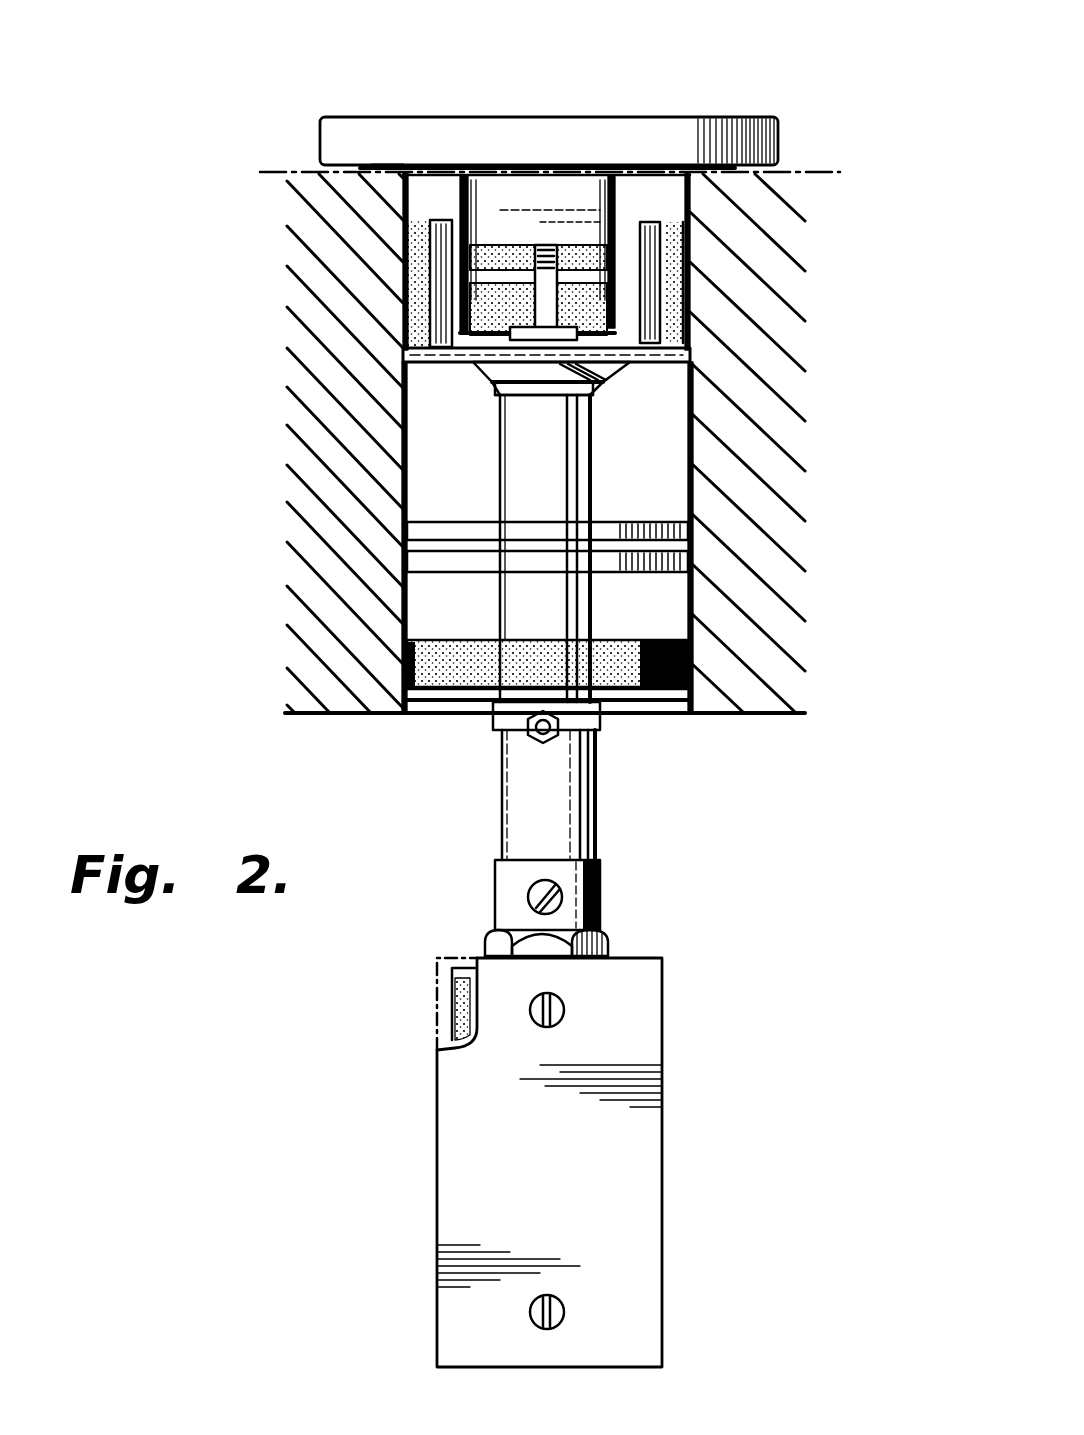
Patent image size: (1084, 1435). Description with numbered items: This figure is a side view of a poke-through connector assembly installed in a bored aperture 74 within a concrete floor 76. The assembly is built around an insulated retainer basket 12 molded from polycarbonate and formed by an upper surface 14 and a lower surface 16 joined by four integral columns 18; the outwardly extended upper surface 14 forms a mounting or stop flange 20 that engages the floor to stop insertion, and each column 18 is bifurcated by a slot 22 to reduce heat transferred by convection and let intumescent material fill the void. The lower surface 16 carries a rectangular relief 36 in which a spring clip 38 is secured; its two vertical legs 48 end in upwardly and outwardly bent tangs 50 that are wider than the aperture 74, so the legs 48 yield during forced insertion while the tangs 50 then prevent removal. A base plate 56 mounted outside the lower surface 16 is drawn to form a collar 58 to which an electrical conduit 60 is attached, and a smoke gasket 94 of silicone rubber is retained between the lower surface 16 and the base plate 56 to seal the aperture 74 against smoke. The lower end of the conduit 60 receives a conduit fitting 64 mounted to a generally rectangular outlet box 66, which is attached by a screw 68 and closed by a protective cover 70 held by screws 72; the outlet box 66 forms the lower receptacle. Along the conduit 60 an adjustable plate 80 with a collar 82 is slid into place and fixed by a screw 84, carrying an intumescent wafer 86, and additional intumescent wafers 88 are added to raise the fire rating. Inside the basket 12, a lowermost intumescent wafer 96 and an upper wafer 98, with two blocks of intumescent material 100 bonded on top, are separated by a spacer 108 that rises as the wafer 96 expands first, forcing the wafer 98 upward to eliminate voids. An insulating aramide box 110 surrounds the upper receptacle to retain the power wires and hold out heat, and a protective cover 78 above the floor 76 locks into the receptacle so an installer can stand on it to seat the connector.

The retainer basket 12 is at (397, 200).
The upper surface 14 is at (415, 168).
The lower surface 16 is at (456, 350).
The columns 18 is at (300, 283).
The mounting or stop flange 20 is at (373, 165).
The slot 22 is at (648, 365).
The relief 36 is at (497, 410).
The spring clip 38 is at (580, 405).
The vertical legs 48 is at (550, 340).
The tangs 50 is at (556, 335).
The base plate 56 is at (400, 366).
The collar 58 is at (478, 368).
The electrical conduit 60 is at (565, 607).
The conduit fitting 64 is at (605, 908).
The outlet box 66 is at (450, 1010).
The screw 68 is at (528, 897).
The protective cover 70 is at (465, 1228).
The screws 72 is at (565, 1010).
The bored aperture 74 is at (403, 613).
The concrete floor 76 is at (793, 177).
The protective cover 78 is at (772, 118).
The adjustable plate 80 is at (425, 692).
The collar 82 is at (598, 727).
The screw 84 is at (535, 730).
The wafer 86 is at (647, 700).
The intumescent wafers 88 is at (667, 563).
The smoke gasket 94 is at (586, 443).
The intumescent wafer 96 is at (690, 310).
The intumescent wafer 98 is at (692, 262).
The blocks of intumescent material 100 is at (397, 245).
The spacer 108 is at (819, 443).
The box 110 is at (496, 195).